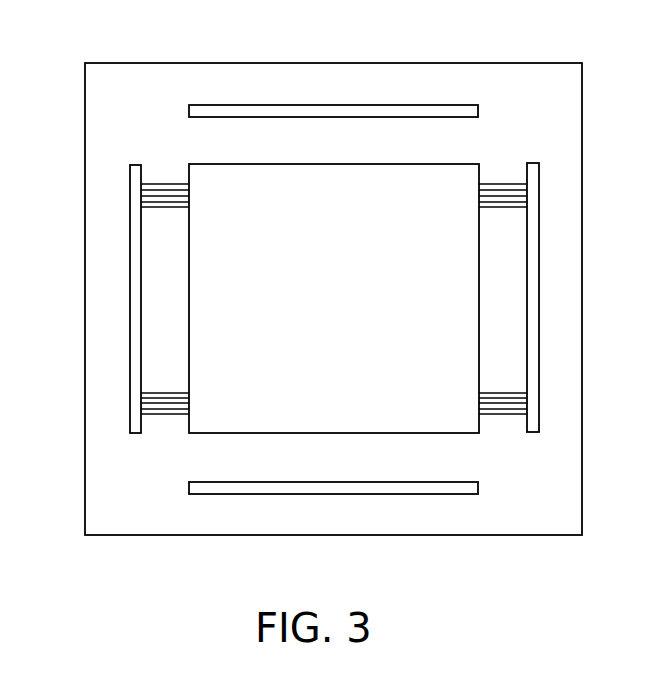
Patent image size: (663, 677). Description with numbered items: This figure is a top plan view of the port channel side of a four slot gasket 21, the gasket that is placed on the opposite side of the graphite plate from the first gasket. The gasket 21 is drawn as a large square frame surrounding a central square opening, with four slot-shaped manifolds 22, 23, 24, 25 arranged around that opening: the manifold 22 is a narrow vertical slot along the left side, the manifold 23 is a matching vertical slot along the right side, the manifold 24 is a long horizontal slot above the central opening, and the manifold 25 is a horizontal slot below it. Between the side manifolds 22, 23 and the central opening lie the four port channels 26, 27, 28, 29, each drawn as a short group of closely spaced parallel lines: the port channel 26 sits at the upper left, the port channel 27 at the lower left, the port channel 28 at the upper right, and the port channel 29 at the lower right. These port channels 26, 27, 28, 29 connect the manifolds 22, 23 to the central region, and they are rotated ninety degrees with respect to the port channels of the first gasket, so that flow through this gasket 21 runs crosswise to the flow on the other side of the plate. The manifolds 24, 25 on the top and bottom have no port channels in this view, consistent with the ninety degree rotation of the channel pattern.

The gasket 21 is at (137, 83).
The manifold 22 is at (133, 315).
The manifold 23 is at (533, 247).
The manifold 24 is at (333, 110).
The manifold 25 is at (327, 486).
The port channel 26 is at (164, 183).
The port channel 27 is at (165, 415).
The port channel 28 is at (503, 183).
The port channel 29 is at (503, 413).